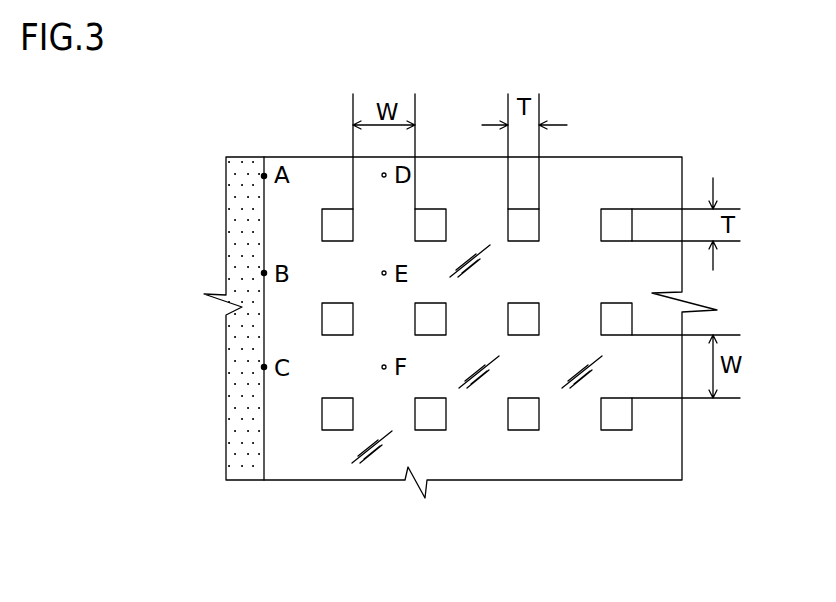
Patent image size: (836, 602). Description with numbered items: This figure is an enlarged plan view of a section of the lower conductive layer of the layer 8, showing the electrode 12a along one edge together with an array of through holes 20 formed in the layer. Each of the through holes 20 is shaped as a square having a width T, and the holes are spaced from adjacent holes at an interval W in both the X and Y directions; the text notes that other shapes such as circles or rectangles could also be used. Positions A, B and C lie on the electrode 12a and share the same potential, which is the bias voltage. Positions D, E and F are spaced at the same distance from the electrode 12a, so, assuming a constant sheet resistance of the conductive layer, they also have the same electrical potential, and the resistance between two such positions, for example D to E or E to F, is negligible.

The circuit board 8 is at (652, 163).
The electrode 12a is at (229, 221).
The through holes 20 is at (527, 422).